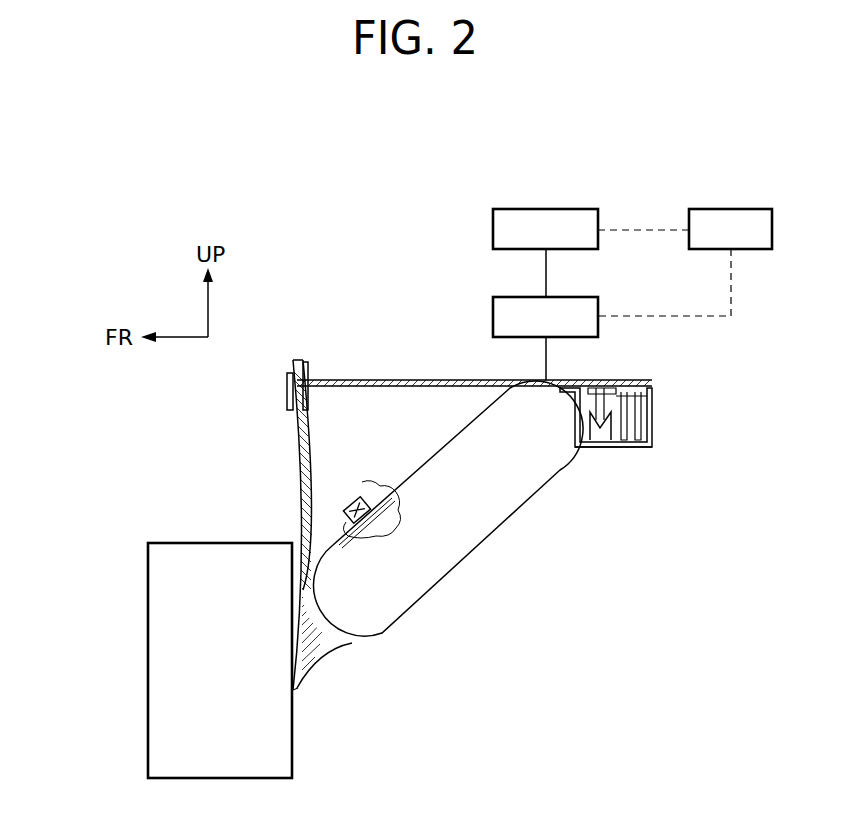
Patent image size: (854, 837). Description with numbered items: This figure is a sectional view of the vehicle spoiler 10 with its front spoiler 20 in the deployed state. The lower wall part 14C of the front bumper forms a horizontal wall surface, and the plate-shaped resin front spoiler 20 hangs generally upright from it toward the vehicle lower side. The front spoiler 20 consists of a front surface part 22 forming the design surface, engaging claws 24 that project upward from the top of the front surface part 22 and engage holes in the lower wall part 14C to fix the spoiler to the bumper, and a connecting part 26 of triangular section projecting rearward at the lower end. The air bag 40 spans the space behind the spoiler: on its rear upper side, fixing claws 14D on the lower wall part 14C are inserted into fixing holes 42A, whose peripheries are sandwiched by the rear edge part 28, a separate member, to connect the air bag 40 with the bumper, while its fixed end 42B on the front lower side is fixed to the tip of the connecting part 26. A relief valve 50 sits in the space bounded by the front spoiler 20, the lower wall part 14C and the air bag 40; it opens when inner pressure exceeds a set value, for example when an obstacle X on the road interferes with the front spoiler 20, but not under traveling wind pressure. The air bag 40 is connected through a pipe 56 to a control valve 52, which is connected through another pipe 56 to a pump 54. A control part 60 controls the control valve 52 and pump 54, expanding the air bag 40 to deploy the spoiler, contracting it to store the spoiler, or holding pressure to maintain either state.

The vehicle spoiler 10 is at (292, 263).
The lower wall part 14C is at (380, 380).
The fixing claws 14D is at (605, 447).
The front spoiler 20 is at (293, 509).
The front surface part 22 is at (305, 516).
The engaging claws 24 is at (299, 362).
The connecting part 26 is at (350, 642).
The rear edge part 28 is at (641, 450).
The air bag 40 is at (485, 502).
The fixing holes 42A is at (596, 386).
The fixed end 42B is at (360, 634).
The relief valve 50 is at (360, 500).
The control valve 52 is at (590, 297).
The pump 54 is at (578, 208).
The pipe 56 is at (546, 276).
The control part 60 is at (732, 208).
The obstacle X is at (148, 700).